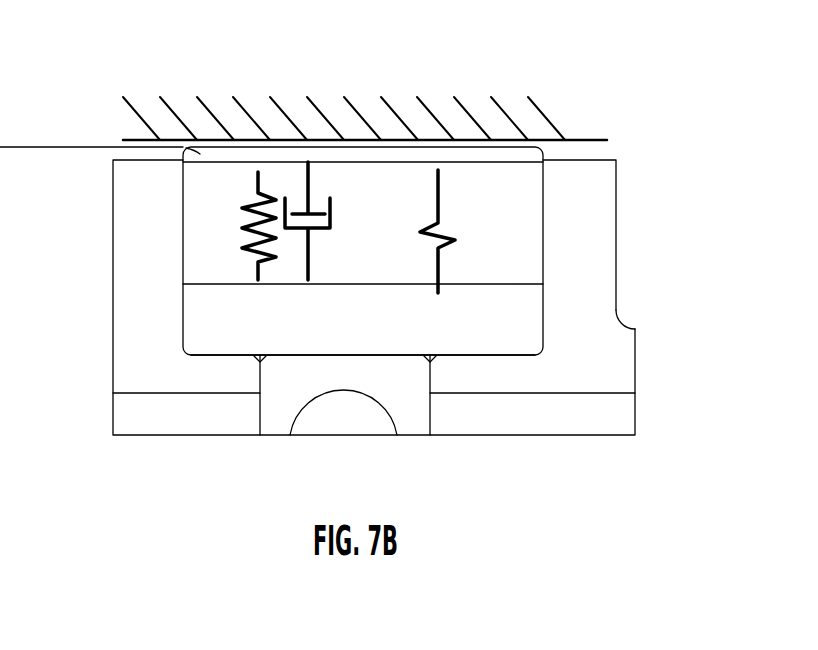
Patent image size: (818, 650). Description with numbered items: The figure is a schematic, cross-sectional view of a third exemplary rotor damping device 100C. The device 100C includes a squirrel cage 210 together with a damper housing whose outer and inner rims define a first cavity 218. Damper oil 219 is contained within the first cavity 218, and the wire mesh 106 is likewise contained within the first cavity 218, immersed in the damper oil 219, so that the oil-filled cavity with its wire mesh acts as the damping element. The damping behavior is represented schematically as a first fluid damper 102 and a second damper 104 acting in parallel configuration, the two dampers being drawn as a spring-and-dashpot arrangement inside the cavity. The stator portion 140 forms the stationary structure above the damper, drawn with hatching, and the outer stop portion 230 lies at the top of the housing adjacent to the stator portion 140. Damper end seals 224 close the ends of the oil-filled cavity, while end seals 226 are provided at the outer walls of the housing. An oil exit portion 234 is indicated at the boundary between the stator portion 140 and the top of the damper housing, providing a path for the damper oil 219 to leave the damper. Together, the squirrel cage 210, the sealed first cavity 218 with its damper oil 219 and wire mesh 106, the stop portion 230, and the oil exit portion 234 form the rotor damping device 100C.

The rotor damping device 100C is at (690, 97).
The first fluid damper 102 is at (76, 362).
The second damper 104 is at (385, 155).
The wire mesh portion 106 is at (352, 193).
The stator portion 140 is at (345, 88).
The squirrel cage 210 is at (588, 317).
The first cavity 218 is at (513, 320).
The damper oil 219 is at (217, 327).
The damper end seal 224 is at (172, 171).
The end seal 226 is at (128, 260).
The outer stop portion 230 is at (593, 138).
The oil exit portion 234 is at (565, 152).